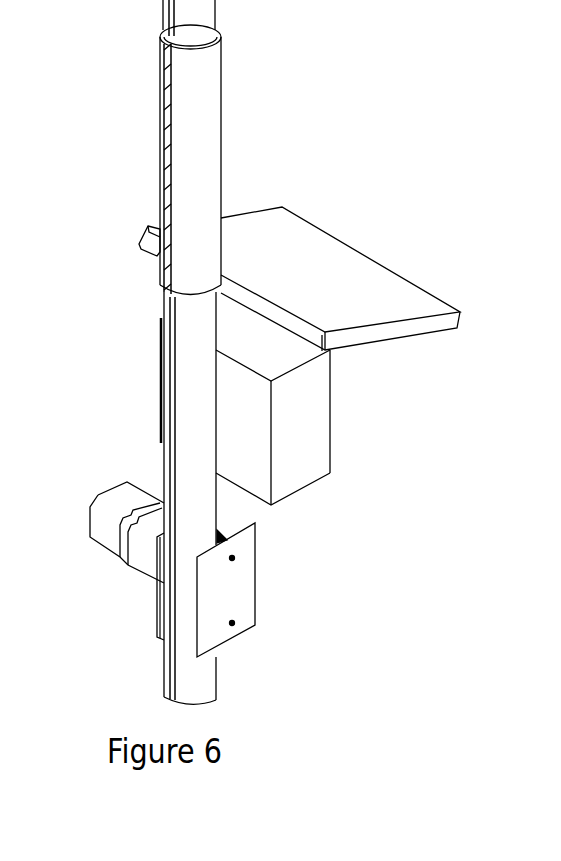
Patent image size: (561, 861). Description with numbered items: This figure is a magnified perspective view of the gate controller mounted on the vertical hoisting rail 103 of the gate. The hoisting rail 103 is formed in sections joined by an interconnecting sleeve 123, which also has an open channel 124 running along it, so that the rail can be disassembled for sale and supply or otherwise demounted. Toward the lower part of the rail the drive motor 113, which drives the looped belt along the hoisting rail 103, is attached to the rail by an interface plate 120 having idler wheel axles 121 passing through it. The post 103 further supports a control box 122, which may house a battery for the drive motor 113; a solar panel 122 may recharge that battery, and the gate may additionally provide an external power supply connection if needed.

The vertical hoisting rail 103 is at (203, 680).
The drive motor 113 is at (99, 484).
The interface plate 120 is at (257, 590).
The idler wheel axle 121 is at (234, 557).
The control box 122 is at (330, 250).
The interconnecting sleeve 123 is at (208, 100).
The open channel 124 is at (162, 118).